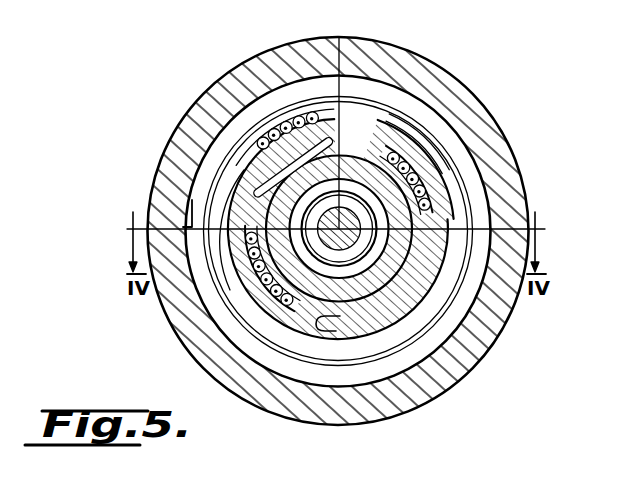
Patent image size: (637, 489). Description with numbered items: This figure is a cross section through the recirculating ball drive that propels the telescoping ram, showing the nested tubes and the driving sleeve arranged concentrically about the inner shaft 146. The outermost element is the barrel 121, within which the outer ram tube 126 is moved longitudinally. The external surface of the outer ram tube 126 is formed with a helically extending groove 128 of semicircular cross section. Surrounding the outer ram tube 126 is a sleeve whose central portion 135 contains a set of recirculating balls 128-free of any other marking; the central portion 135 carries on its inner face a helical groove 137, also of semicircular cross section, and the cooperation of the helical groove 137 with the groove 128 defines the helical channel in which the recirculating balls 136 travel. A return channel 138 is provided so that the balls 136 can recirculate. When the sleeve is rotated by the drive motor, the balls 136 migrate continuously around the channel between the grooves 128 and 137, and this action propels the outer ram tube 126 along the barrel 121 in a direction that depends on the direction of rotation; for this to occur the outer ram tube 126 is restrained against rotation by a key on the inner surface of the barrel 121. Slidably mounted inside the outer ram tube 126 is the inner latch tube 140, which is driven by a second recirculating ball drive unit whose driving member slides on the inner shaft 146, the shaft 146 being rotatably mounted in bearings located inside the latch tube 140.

The barrel 121 is at (510, 187).
The outer ram tube 126 is at (418, 380).
The helically extending groove 128 is at (345, 137).
The central portion 135 is at (420, 296).
The recirculating balls 136 is at (262, 294).
The helical groove 137 is at (425, 178).
The return channel 138 is at (400, 128).
The inner latch tube 140 is at (350, 292).
The inner shaft 146 is at (330, 225).